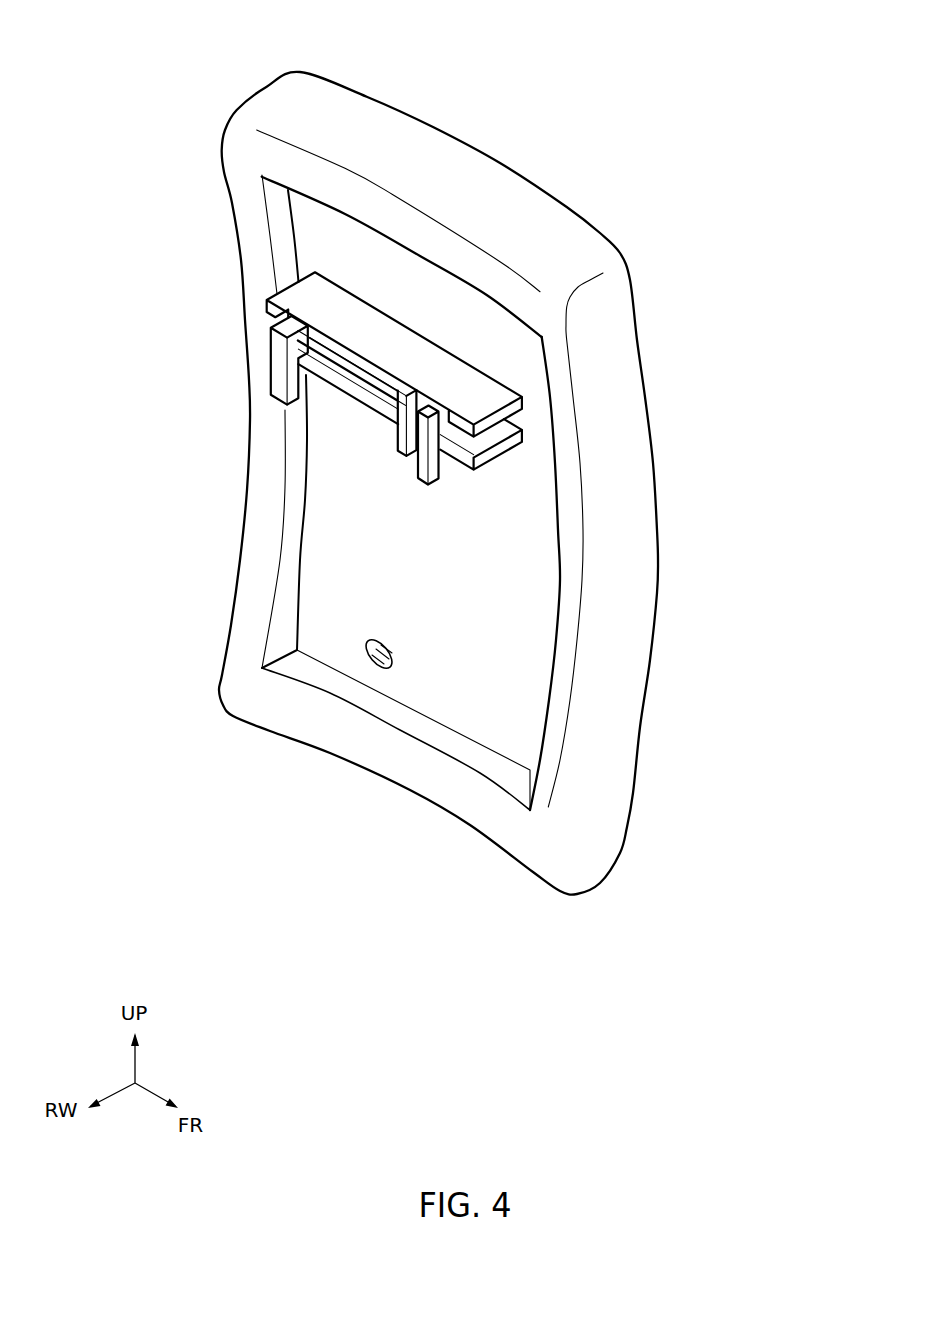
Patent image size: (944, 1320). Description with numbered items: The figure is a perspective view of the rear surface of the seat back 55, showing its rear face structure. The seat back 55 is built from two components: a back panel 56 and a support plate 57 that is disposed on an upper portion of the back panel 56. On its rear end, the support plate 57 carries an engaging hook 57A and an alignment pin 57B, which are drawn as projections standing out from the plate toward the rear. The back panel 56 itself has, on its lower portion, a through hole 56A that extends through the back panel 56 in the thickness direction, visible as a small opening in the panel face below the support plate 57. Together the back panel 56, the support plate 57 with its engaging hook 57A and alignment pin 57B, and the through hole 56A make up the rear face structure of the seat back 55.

The seat back 55 is at (440, 485).
The back panel 56 is at (552, 868).
The through hole 56A is at (378, 637).
The support plate 57 is at (491, 391).
The engaging hook 57A is at (268, 373).
The alignment pin 57B is at (403, 450).